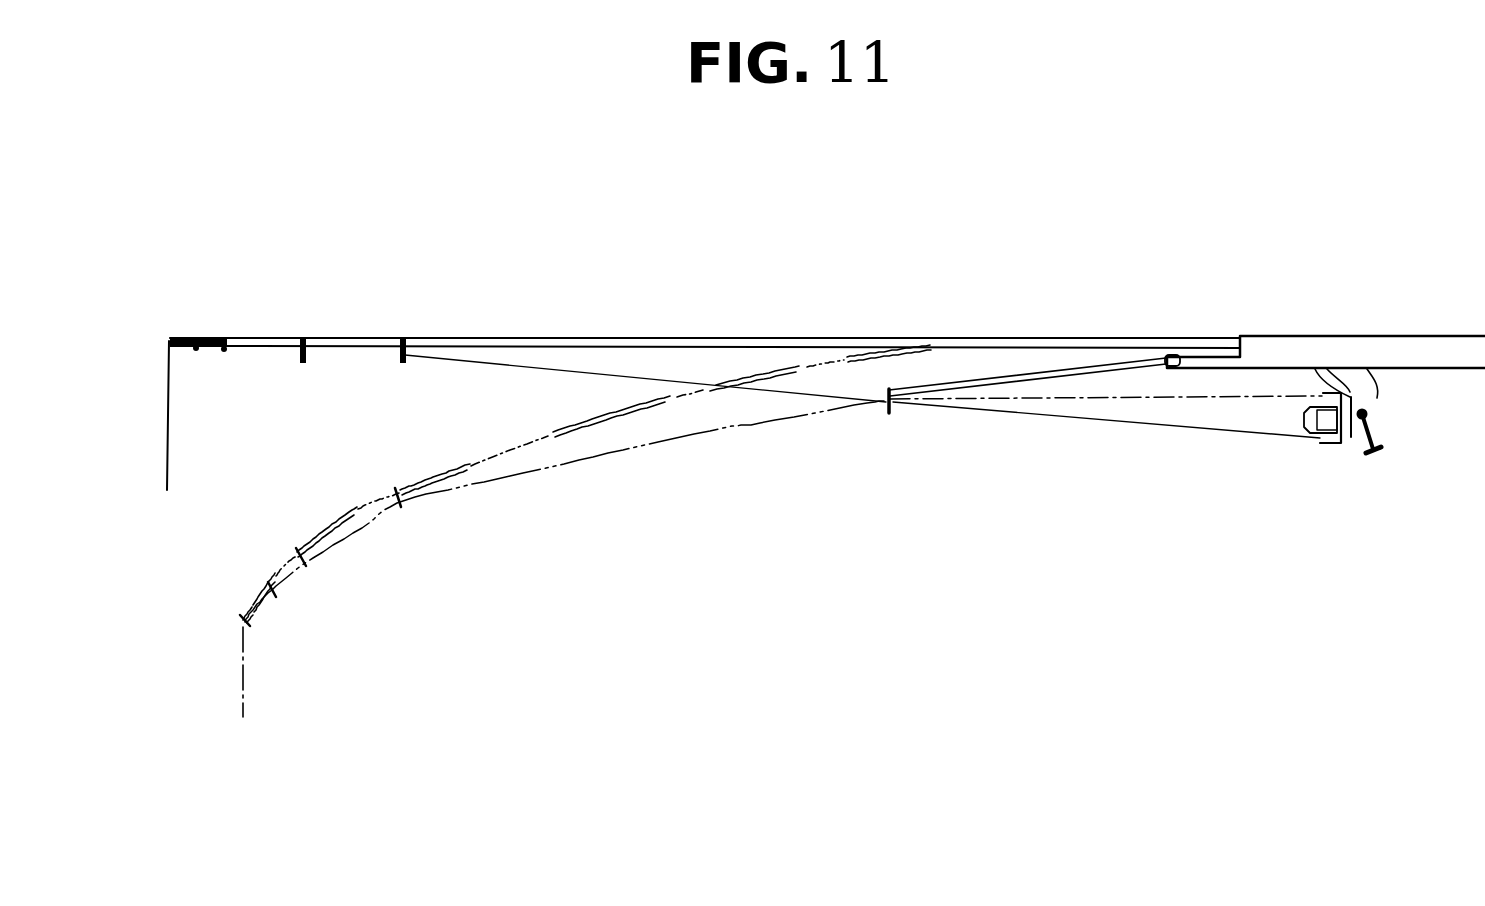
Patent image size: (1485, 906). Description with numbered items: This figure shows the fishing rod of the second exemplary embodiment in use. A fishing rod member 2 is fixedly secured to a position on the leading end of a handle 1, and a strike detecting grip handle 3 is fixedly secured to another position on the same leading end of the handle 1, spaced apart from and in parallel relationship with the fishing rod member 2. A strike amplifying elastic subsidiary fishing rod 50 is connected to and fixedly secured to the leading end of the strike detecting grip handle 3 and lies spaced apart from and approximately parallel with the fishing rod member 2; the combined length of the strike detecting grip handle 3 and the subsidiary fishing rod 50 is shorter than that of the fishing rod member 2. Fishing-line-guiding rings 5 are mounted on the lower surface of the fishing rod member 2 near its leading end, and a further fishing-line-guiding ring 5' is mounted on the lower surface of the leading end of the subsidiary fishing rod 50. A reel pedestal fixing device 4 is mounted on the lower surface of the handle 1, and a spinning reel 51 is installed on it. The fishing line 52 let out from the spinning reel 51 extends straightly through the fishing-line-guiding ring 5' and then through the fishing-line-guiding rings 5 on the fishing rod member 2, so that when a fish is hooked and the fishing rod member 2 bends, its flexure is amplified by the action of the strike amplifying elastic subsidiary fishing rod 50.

The handle 1 is at (1312, 338).
The fishing rod member 2 is at (968, 338).
The strike detecting grip handle 3 is at (1215, 370).
The reel pedestal fixing device 4 is at (1380, 370).
The fishing-line-guiding ring 5 is at (292, 382).
The fishing-line-guiding ring 5' is at (883, 449).
The strike amplifying elastic subsidiary fishing rod 50 is at (1027, 380).
The spinning reel 51 is at (1333, 443).
The fishing line 52 is at (1103, 422).